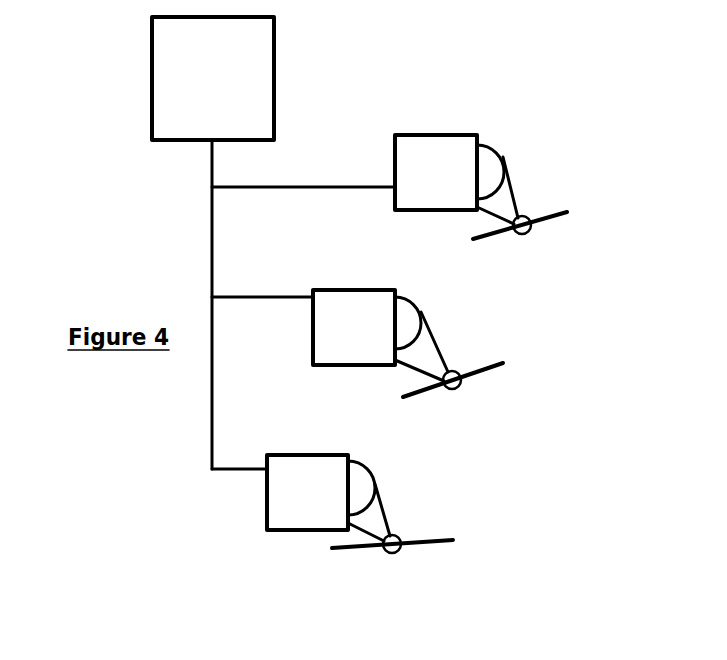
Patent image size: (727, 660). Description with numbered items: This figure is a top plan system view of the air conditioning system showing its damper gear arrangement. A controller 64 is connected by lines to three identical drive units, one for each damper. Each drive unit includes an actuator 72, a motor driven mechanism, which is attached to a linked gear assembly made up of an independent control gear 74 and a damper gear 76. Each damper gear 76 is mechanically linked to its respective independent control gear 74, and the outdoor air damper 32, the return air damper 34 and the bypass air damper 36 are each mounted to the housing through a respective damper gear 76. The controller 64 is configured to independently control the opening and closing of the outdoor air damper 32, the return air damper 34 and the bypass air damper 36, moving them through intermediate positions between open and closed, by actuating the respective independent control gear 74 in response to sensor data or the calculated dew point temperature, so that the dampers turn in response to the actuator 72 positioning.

The controller 64 is at (150, 128).
The actuator 72 is at (433, 132).
The independent control gear 74 is at (502, 151).
The damper gear 76 is at (525, 233).
The outdoor air damper 32 is at (565, 215).
The return air damper 34 is at (507, 366).
The bypass air damper 36 is at (447, 543).